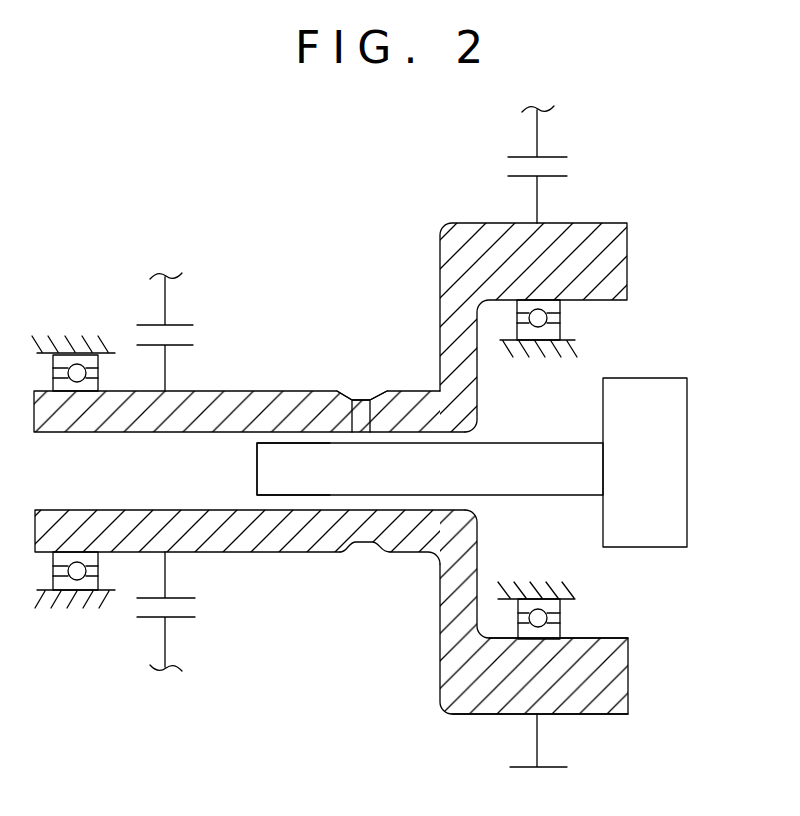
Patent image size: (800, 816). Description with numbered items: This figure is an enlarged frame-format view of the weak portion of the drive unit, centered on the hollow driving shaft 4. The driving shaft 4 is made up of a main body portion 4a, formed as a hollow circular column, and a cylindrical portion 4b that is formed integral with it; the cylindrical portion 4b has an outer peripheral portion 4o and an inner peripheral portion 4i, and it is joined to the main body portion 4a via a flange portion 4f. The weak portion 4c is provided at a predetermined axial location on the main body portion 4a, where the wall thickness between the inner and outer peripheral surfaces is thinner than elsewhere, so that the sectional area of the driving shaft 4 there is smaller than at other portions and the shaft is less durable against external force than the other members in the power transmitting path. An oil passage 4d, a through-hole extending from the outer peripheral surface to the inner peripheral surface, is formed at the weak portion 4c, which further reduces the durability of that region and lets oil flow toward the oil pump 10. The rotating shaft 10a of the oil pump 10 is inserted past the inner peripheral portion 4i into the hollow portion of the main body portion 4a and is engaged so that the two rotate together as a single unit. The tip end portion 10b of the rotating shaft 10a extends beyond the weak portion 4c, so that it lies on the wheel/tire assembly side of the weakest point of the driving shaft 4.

The driving shaft 4 is at (346, 506).
The main body portion 4a is at (270, 544).
The cylindrical portion 4b is at (467, 697).
The weak portion 4c is at (363, 559).
The oil passage 4d is at (362, 397).
The flange portion 4f is at (457, 317).
The inner peripheral portion 4i is at (612, 638).
The outer peripheral portion 4o is at (613, 714).
The oil pump 10 is at (667, 415).
The rotating shaft 10a is at (547, 452).
The tip end portion 10b is at (273, 470).